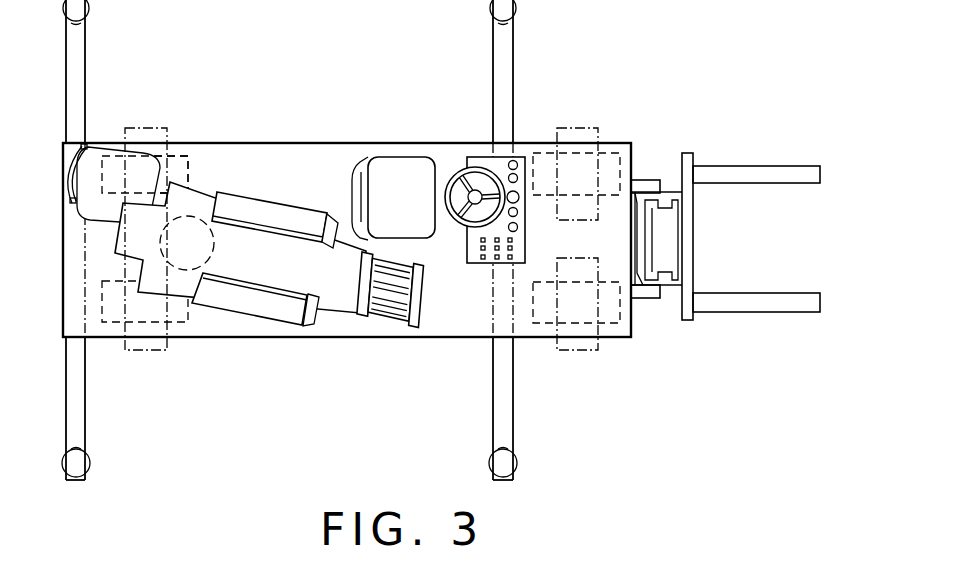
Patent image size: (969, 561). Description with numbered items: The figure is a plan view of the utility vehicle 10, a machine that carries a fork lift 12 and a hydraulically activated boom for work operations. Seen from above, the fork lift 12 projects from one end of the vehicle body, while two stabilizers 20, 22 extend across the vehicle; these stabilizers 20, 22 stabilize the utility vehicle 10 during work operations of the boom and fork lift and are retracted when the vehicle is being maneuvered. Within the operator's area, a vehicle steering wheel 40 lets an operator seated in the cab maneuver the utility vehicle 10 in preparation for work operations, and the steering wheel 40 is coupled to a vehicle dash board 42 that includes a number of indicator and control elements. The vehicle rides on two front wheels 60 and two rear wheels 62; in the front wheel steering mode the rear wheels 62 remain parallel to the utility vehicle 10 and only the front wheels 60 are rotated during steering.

The utility vehicle 10 is at (541, 84).
The fork lift 12 is at (687, 322).
The stabilizer 20 is at (73, 418).
The stabilizer 22 is at (500, 417).
The vehicle steering wheel 40 is at (453, 170).
The vehicle dash board 42 is at (473, 253).
The front wheels 60 is at (580, 128).
The rear wheels 62 is at (138, 127).